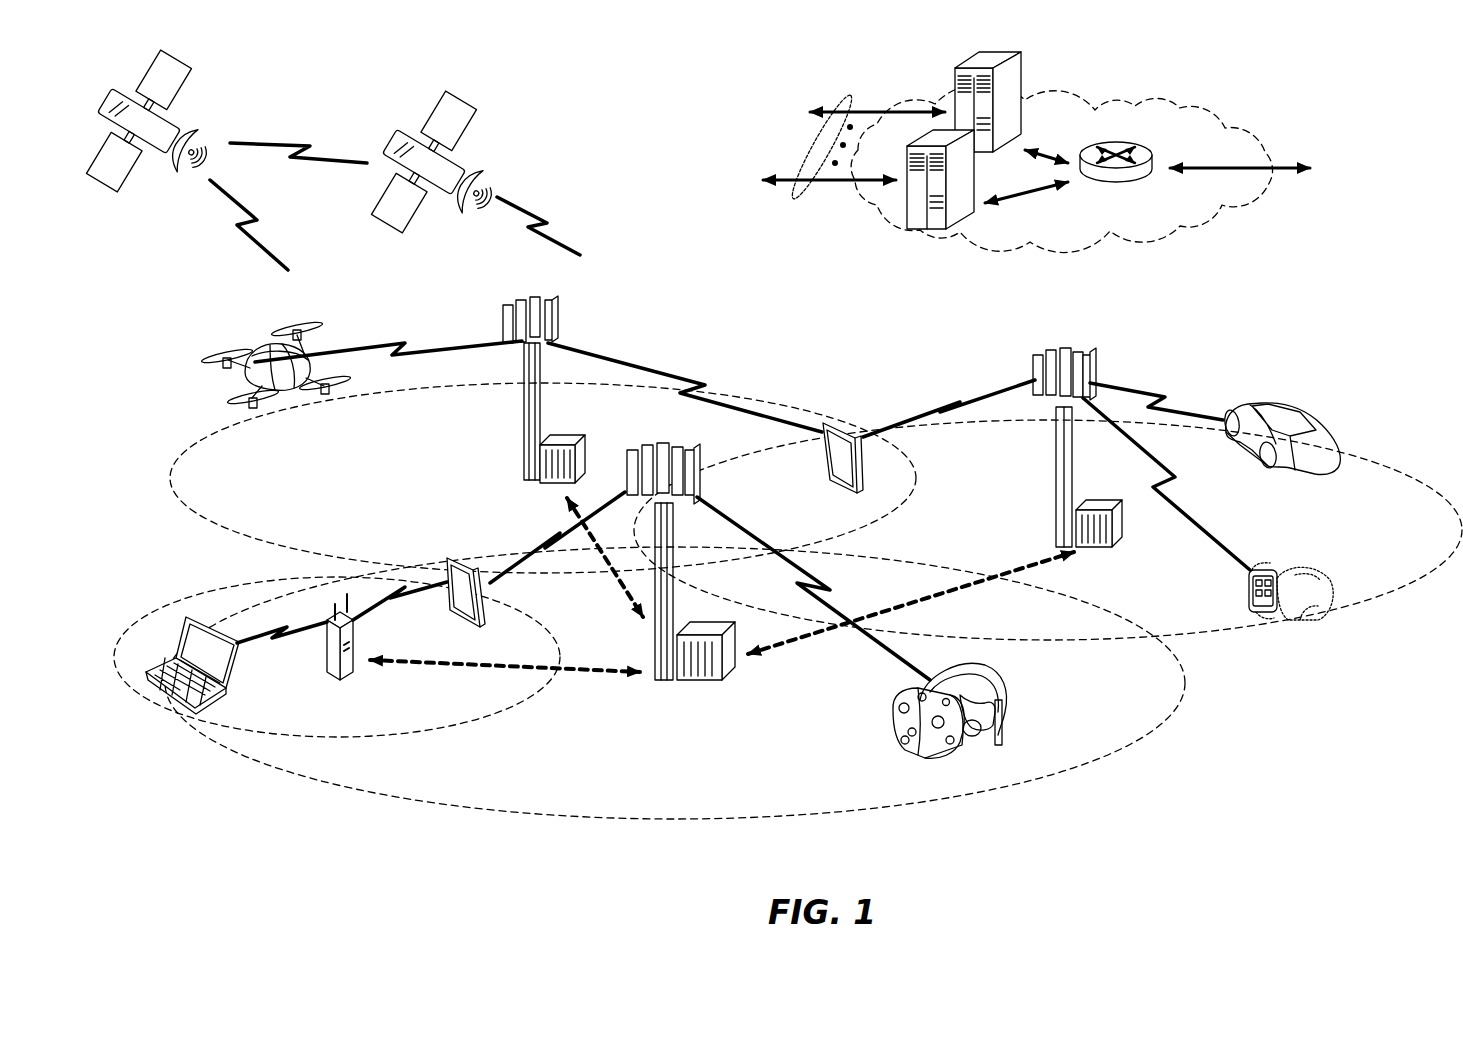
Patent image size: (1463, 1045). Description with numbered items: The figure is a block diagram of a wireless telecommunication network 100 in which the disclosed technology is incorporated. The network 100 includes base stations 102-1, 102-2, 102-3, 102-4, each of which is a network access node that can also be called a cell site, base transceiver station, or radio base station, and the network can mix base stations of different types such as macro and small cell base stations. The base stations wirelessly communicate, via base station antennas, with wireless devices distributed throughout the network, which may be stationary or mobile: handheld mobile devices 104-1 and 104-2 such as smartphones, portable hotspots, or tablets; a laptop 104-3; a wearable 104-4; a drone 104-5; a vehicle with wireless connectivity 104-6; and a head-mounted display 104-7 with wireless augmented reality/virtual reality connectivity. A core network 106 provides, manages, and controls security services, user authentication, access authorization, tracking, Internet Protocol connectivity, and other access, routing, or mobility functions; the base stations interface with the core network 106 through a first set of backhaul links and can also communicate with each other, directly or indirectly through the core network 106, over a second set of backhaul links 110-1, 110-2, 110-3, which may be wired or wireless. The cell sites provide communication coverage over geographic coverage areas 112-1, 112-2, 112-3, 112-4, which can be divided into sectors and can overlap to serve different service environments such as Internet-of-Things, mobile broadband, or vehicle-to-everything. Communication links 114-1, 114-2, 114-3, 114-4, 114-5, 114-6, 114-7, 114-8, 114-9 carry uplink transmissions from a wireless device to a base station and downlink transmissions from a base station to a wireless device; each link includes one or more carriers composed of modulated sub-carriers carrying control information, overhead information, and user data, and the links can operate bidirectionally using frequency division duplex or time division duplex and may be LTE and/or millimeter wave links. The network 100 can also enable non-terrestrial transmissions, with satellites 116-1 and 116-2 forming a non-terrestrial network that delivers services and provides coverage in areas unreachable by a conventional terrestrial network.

The wireless telecommunication network 100 is at (1394, 120).
The base station 102-1 is at (661, 683).
The base station 102-2 is at (524, 428).
The base station 102-3 is at (1055, 463).
The base station 102-4 is at (328, 660).
The handheld mobile device 104-1 is at (483, 606).
The handheld mobile device 104-2 is at (821, 464).
The laptop 104-3 is at (182, 700).
The wearable 104-4 is at (1265, 570).
The drone 104-5 is at (287, 393).
The vehicle with wireless connectivity 104-6 is at (1305, 420).
The head-mounted display 104-7 is at (1000, 705).
The core network 106 is at (1150, 233).
The backhaul link 110-1 is at (397, 666).
The backhaul link 110-2 is at (973, 587).
The backhaul link 110-3 is at (624, 586).
The geographic coverage area 112-1 is at (592, 817).
The geographic coverage area 112-2 is at (467, 722).
The geographic coverage area 112-3 is at (235, 535).
The geographic coverage area 112-4 is at (1363, 470).
The communication link 114-1 is at (827, 591).
The communication link 114-2 is at (546, 545).
The communication link 114-3 is at (247, 640).
The communication link 114-4 is at (400, 602).
The communication link 114-5 is at (407, 345).
The communication link 114-6 is at (697, 374).
The communication link 114-7 is at (947, 405).
The communication link 114-8 is at (1187, 505).
The communication link 114-9 is at (1153, 393).
The satellite 116-1 is at (194, 134).
The satellite 116-2 is at (479, 172).